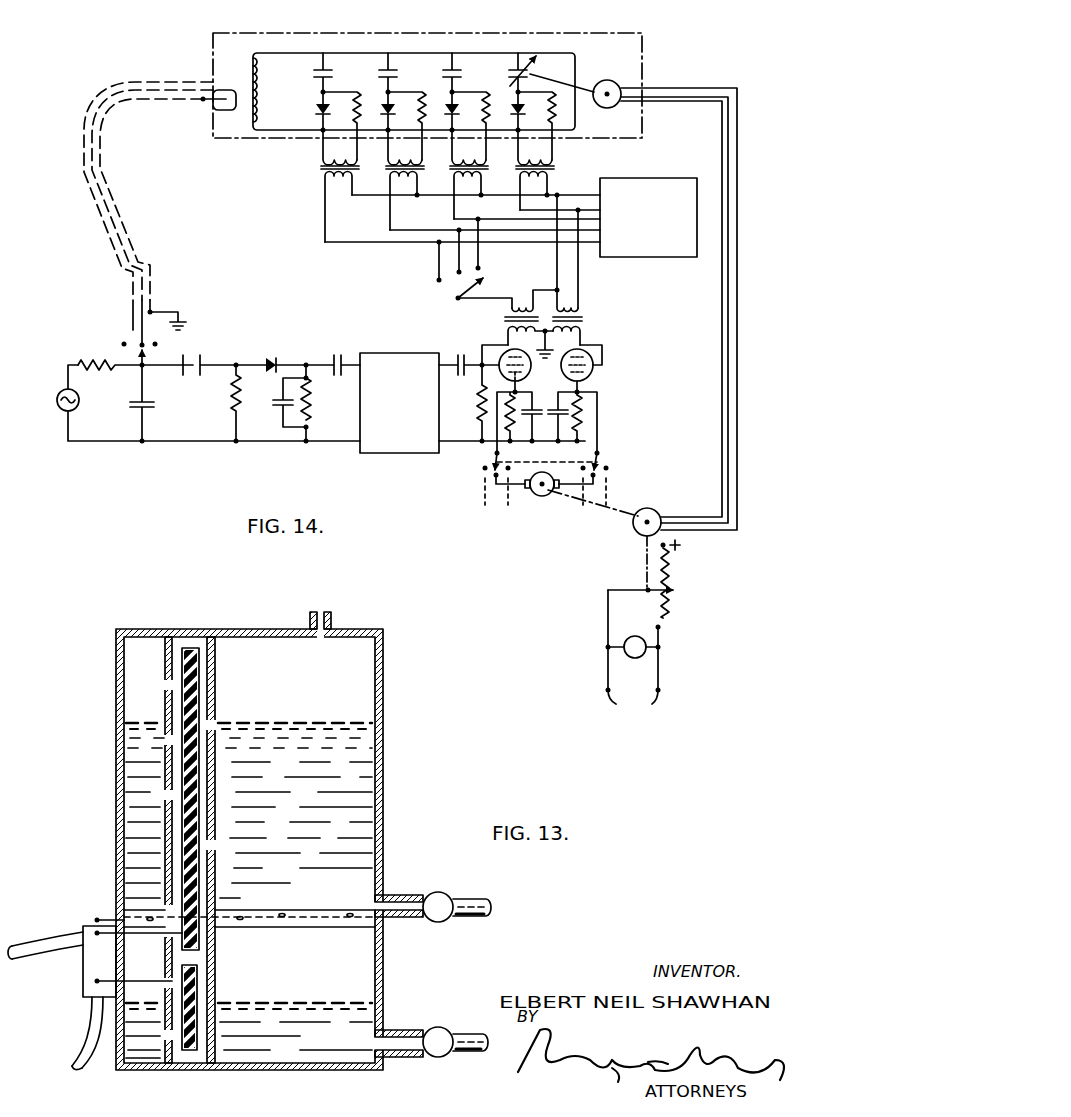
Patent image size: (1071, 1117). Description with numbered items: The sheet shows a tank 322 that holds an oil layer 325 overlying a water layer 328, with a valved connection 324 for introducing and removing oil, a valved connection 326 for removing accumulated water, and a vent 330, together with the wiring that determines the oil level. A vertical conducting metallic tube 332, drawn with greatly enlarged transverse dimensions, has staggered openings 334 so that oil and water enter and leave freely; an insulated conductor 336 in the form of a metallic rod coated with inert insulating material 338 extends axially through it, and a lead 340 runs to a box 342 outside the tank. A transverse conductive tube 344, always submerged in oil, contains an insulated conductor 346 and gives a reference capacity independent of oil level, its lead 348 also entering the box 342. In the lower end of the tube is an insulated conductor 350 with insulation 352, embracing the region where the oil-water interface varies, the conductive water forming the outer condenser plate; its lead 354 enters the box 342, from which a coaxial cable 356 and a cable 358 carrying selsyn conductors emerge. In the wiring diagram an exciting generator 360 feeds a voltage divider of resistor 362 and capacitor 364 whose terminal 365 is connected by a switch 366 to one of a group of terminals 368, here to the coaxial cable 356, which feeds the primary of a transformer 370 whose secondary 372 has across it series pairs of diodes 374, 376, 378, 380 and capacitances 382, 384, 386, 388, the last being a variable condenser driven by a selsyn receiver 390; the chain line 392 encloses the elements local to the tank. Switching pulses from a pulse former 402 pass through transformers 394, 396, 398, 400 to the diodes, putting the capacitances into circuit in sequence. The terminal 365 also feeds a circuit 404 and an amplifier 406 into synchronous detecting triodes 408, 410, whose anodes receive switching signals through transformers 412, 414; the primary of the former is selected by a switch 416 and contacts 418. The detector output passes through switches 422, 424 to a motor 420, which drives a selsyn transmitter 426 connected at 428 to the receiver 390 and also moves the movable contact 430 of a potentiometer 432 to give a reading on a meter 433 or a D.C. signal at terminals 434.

In FIG. 13, the tank 322 is at (384, 710).
In FIG. 13, the valved connection 324 is at (456, 898).
In FIG. 13, the oil layer 325 is at (300, 818).
In FIG. 13, the valved connection 326 is at (456, 1034).
In FIG. 13, the water layer 328 is at (284, 1050).
In FIG. 13, the vent 330 is at (328, 622).
In FIG. 13, the vertical conducting metallic tube 332 is at (218, 710).
In FIG. 13, the staggered openings 334 is at (160, 823).
In FIG. 13, the insulated conductor 336 is at (206, 866).
In FIG. 13, the inert insulating material 338 is at (212, 838).
In FIG. 13, the lead 340 is at (146, 928).
In FIG. 13, the box 342 is at (86, 960).
In FIG. 13, the conductive tube 344 is at (296, 910).
In FIG. 13, the insulated conductor 346 is at (282, 924).
In FIG. 13, the lead 348 is at (96, 918).
In FIG. 13, the insulated conductor 350 is at (206, 1004).
In FIG. 13, the insulation 352 is at (200, 976).
In FIG. 13, the lead 354 is at (162, 976).
In FIG. 14, the coaxial cable 356 is at (146, 220).
In FIG. 13, the coaxial cable 356 is at (90, 1062).
In FIG. 13, the cable 358 is at (44, 940).
In FIG. 14, the exciting generator 360 is at (55, 404).
In FIG. 14, the resistor 362 is at (96, 362).
In FIG. 14, the capacitor 364 is at (150, 406).
In FIG. 14, the terminal 365 is at (122, 403).
In FIG. 14, the switch 366 is at (146, 352).
In FIG. 14, the terminals 368 is at (130, 348).
In FIG. 14, the transformer 370 is at (230, 94).
In FIG. 14, the secondary 372 is at (260, 82).
In FIG. 14, the diode 374 is at (314, 110).
In FIG. 14, the diode 376 is at (350, 104).
In FIG. 14, the diode 378 is at (416, 104).
In FIG. 14, the diode 380 is at (510, 106).
In FIG. 14, the capacitance 382 is at (322, 60).
In FIG. 14, the capacitance 384 is at (387, 60).
In FIG. 14, the capacitance 386 is at (451, 60).
In FIG. 14, the variable condenser 388 is at (516, 60).
In FIG. 14, the selsyn receiver 390 is at (614, 82).
In FIG. 14, the chain line 392 is at (490, 40).
In FIG. 14, the transformer 394 is at (318, 178).
In FIG. 14, the transformer 396 is at (382, 168).
In FIG. 14, the transformer 398 is at (448, 168).
In FIG. 14, the transformer 400 is at (514, 168).
In FIG. 14, the pulse former 402 is at (650, 178).
In FIG. 14, the circuit 404 is at (274, 357).
In FIG. 14, the amplifier 406 is at (404, 353).
In FIG. 14, the triode 408 is at (522, 372).
In FIG. 14, the triode 410 is at (592, 372).
In FIG. 14, the transformer 412 is at (502, 322).
In FIG. 14, the transformer 414 is at (590, 323).
In FIG. 14, the switch 416 is at (468, 290).
In FIG. 14, the contacts 418 is at (466, 268).
In FIG. 14, the motor 420 is at (538, 498).
In FIG. 14, the switch 422 is at (490, 460).
In FIG. 14, the switch 424 is at (600, 460).
In FIG. 14, the selsyn transmitter 426 is at (658, 510).
In FIG. 14, the connection 428 is at (728, 374).
In FIG. 14, the movable contact 430 is at (642, 585).
In FIG. 14, the potentiometer 432 is at (676, 588).
In FIG. 14, the meter 433 is at (630, 634).
In FIG. 14, the terminals 434 is at (633, 702).